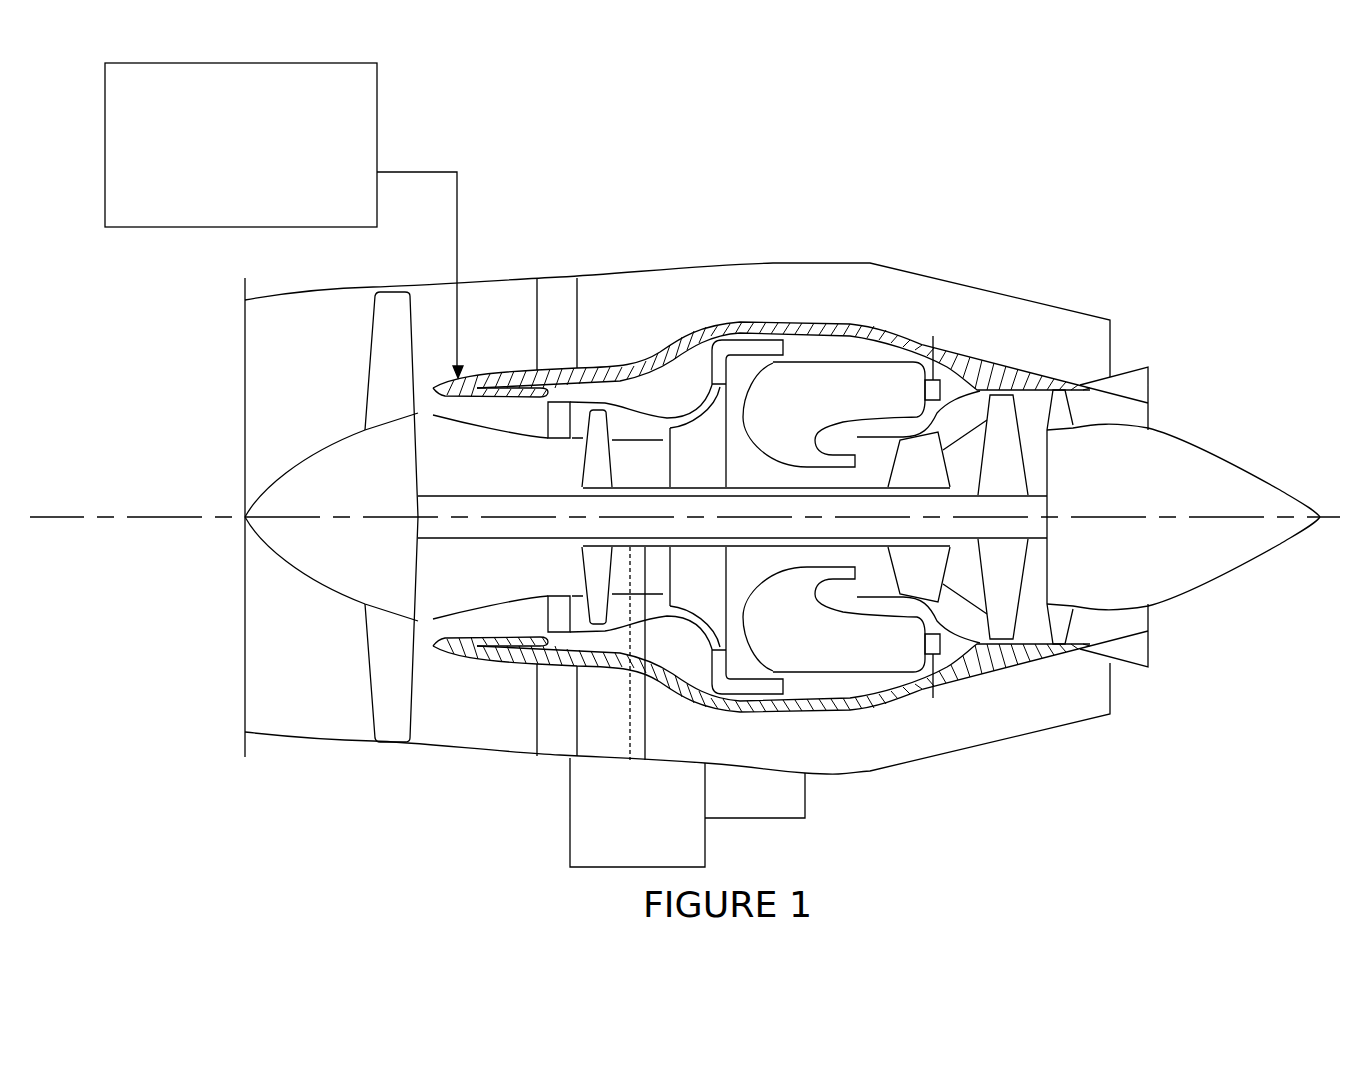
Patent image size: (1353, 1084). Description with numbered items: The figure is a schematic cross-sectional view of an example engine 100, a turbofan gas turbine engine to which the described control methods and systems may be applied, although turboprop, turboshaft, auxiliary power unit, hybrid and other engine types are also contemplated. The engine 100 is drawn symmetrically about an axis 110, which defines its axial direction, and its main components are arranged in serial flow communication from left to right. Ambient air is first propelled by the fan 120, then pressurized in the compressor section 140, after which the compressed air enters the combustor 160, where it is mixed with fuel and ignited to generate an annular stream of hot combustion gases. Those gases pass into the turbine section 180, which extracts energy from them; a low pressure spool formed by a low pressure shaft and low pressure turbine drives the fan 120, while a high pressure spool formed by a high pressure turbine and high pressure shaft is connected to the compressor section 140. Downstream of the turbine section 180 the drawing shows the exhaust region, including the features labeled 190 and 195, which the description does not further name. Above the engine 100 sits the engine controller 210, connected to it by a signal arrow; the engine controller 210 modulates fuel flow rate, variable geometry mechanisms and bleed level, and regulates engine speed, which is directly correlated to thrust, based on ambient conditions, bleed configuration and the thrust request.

The engine 100 is at (985, 212).
The axis 110 is at (162, 512).
The fan 120 is at (387, 662).
The compressor section 140 is at (628, 420).
The combustor 160 is at (837, 380).
The turbine section 180 is at (960, 578).
The exhaust nozzle 190 is at (1017, 400).
The core casing 195 is at (917, 443).
The engine controller 210 is at (267, 181).